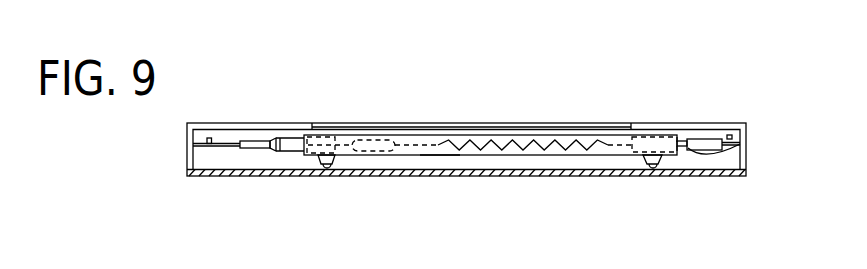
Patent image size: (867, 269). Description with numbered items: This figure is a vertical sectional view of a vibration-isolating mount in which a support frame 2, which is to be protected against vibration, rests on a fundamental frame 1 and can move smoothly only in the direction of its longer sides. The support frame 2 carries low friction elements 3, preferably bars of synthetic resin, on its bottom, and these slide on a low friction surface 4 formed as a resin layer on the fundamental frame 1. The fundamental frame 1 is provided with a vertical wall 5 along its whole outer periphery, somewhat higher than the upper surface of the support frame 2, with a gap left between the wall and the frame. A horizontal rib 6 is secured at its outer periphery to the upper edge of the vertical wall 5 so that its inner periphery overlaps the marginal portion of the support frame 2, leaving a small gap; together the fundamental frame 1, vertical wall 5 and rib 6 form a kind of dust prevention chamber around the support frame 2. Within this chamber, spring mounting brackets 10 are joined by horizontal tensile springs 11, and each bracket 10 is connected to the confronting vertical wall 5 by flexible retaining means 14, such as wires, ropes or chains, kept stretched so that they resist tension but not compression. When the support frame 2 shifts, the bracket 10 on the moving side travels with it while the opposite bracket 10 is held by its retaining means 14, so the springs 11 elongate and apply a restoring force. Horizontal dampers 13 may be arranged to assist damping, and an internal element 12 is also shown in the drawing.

The fundamental frame 1 is at (396, 177).
The support frame 2 is at (418, 134).
The low friction elements 3 is at (323, 166).
The low friction surface 4 is at (471, 156).
The vertical wall 5 is at (746, 150).
The horizontal rib 6 is at (638, 124).
The spring mounting brackets 10 is at (272, 148).
The horizontal tensile springs 11 is at (441, 156).
The internal element 12 is at (358, 153).
The horizontal dampers 13 is at (214, 148).
The flexible retaining means 14 is at (714, 156).